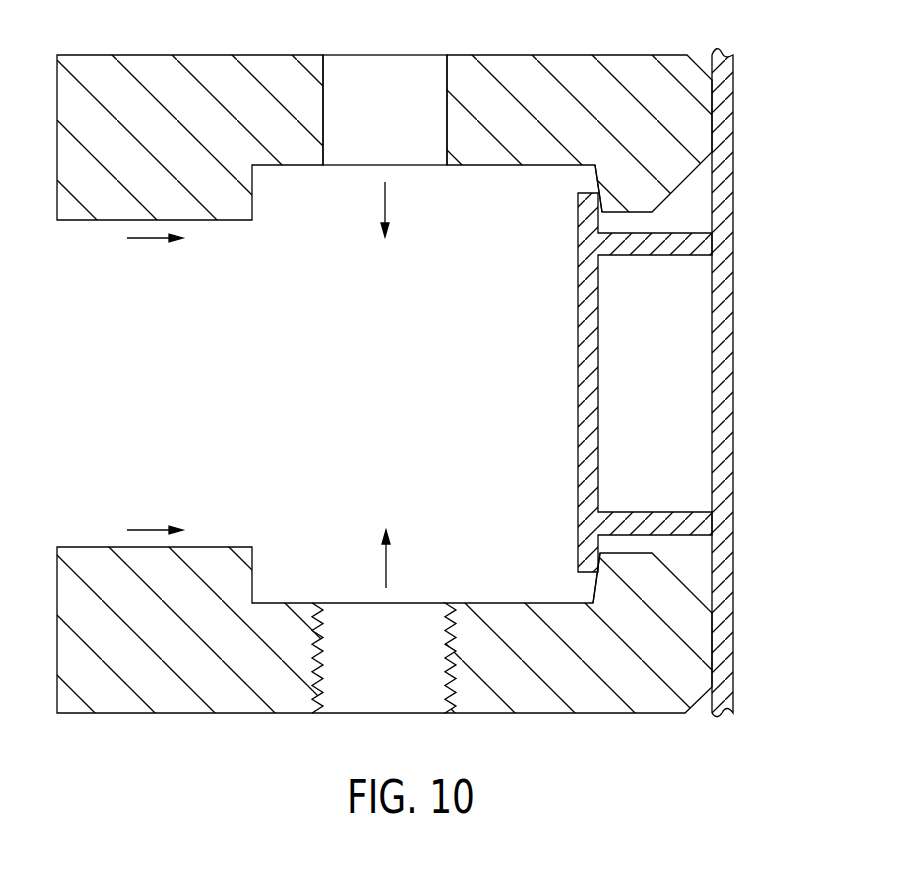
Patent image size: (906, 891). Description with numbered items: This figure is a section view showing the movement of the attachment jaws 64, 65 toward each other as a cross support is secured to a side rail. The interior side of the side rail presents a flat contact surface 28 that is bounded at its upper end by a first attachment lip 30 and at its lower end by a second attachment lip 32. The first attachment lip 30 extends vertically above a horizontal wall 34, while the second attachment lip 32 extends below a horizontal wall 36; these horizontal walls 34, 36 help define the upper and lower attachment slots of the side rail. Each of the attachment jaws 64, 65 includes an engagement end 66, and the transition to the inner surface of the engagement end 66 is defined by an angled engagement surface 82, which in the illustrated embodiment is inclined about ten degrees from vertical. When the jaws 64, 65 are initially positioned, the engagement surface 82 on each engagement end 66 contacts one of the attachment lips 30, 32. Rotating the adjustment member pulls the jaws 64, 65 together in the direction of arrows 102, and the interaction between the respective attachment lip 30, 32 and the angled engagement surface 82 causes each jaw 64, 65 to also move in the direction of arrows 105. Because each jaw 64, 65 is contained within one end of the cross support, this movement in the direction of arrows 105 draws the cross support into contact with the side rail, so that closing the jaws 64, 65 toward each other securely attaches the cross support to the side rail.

The flat contact surface 28 is at (578, 380).
The first attachment lip 30 is at (578, 222).
The second attachment lip 32 is at (578, 561).
The horizontal wall 34 is at (653, 247).
The horizontal wall 36 is at (660, 520).
The attachment jaw 64 is at (567, 63).
The attachment jaw 65 is at (485, 693).
The engagement end 66 is at (700, 128).
The engagement surface 82 is at (596, 175).
The arrows 102 is at (385, 200).
The arrows 105 is at (150, 238).